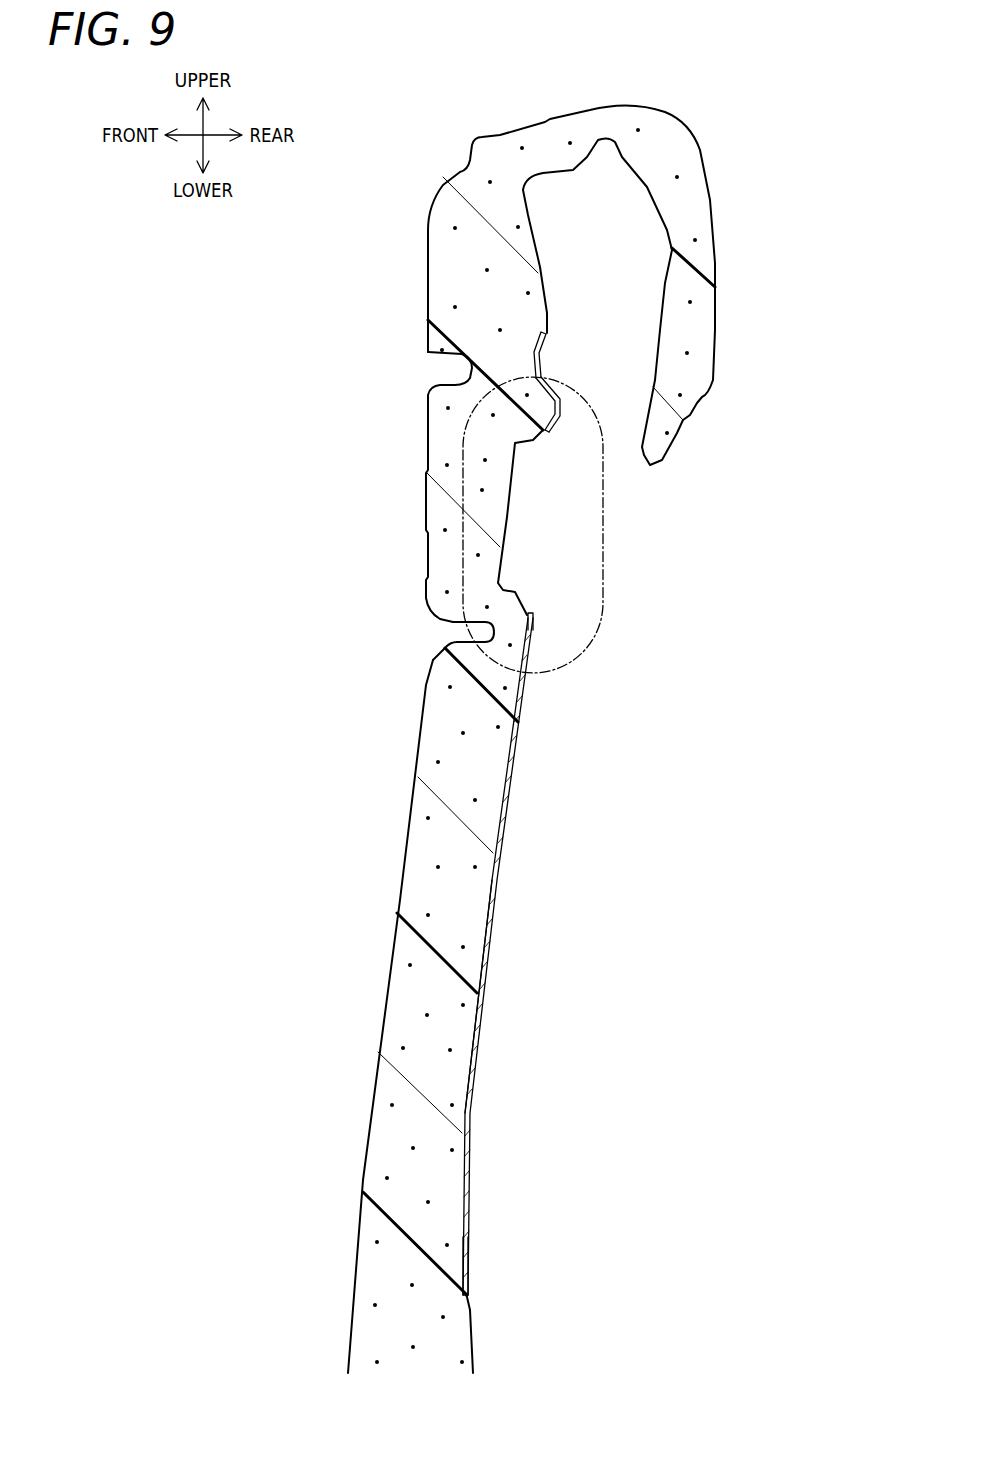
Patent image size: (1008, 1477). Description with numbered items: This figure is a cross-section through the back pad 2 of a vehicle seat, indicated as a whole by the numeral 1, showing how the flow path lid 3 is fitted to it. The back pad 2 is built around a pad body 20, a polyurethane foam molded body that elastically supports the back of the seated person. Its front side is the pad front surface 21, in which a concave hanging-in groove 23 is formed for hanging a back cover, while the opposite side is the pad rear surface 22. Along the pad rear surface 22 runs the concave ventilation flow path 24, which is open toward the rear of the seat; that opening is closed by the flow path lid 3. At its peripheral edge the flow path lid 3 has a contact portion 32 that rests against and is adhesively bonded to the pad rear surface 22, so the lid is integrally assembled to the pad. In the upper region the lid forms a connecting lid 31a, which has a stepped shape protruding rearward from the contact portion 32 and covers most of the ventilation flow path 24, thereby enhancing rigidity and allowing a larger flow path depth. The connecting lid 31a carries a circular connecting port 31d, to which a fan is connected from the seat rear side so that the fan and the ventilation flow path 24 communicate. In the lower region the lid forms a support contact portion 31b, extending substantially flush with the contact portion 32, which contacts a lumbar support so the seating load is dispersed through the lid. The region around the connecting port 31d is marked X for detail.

The vehicle door seal structure 1 is at (826, 93).
The back pad 2 is at (693, 130).
The flow path lid 3 is at (488, 1067).
The pad body 20 is at (493, 160).
The pad front surface 21 is at (410, 826).
The pad rear surface 22 is at (505, 888).
The hanging-in groove 23 is at (487, 633).
The ventilation flow path 24 is at (515, 515).
The connecting lid 31a is at (557, 413).
The support contact portion 31b is at (488, 958).
The connecting port 31d is at (550, 432).
The contact portion 32 is at (547, 363).
The region X is at (606, 639).